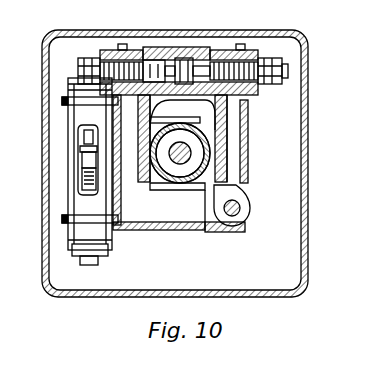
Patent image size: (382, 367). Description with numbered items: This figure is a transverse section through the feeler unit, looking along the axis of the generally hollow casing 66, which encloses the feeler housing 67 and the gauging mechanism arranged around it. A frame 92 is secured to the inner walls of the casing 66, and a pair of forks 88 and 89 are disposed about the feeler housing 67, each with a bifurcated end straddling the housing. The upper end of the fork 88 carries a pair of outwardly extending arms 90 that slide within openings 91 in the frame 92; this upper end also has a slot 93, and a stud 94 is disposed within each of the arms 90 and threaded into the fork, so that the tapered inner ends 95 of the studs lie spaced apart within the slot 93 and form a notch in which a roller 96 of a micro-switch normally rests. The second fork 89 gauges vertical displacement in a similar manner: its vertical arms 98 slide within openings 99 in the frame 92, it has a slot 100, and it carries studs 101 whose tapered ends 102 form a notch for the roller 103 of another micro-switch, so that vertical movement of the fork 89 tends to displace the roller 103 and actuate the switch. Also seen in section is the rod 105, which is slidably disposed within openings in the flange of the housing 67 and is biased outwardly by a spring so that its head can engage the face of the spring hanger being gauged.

The casing 66 is at (262, 298).
The feeler housing 67 is at (203, 206).
The fork 88 is at (228, 150).
The fork 89 is at (172, 224).
The arms 90 is at (108, 50).
The openings 91 is at (123, 45).
The frame 92 is at (249, 115).
The slot 93 is at (185, 72).
The stud 94 is at (96, 58).
The tapered inner ends 95 is at (150, 62).
The roller 96 is at (180, 58).
The vertical arms 98 is at (68, 118).
The openings 99 is at (64, 100).
The slot 100 is at (80, 142).
The studs 101 is at (82, 182).
The tapered ends 102 is at (82, 168).
The roller 103 is at (80, 155).
The rod 105 is at (240, 206).